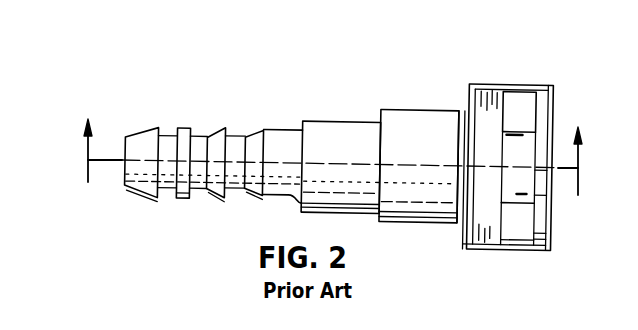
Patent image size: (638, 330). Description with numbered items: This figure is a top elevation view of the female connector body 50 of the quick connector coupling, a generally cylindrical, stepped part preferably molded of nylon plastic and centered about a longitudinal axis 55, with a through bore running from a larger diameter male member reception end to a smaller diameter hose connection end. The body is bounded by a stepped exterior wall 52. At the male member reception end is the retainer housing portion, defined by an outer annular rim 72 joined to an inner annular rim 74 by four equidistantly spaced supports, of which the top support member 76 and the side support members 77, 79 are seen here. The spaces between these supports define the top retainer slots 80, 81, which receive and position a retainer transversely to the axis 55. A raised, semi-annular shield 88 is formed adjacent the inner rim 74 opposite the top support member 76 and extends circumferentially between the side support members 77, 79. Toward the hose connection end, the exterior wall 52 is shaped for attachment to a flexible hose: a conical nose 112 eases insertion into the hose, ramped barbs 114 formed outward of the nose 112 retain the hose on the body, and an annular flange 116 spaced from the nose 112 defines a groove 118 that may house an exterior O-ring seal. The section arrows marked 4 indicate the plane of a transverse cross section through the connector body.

The section line 4- 4 is at (327, 172).
The connector body 50 is at (404, 96).
The exterior wall 52 is at (288, 93).
The axis 55 is at (340, 163).
The outer annular rim 72 is at (555, 112).
The inner annular rim 74 is at (481, 127).
The top support member 76 is at (527, 152).
The side support member 77 is at (490, 253).
The side support member 79 is at (502, 82).
The top retainer slot 80 is at (513, 242).
The top retainer slot 81 is at (520, 103).
The semi-annular shield 88 is at (456, 212).
The conical nose 112 is at (143, 137).
The ramped barbs 114 is at (208, 200).
The annular flange 116 is at (185, 132).
The groove 118 is at (168, 196).